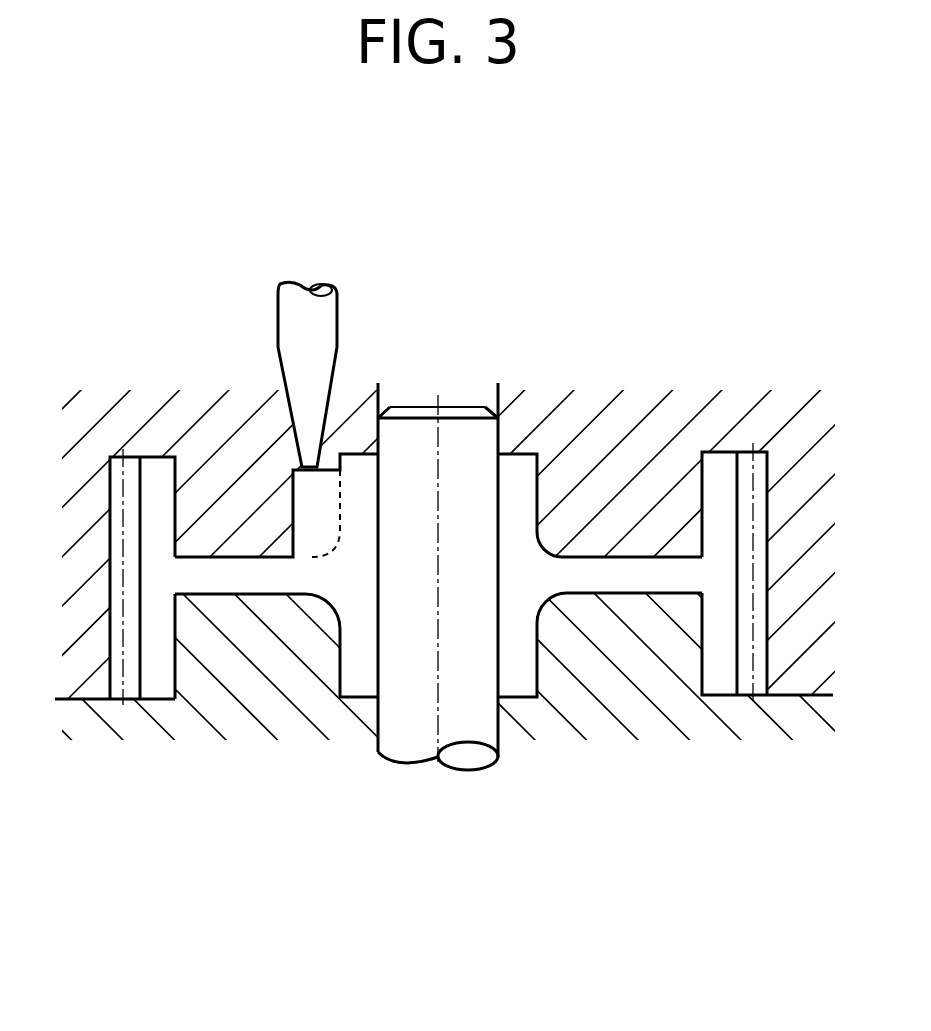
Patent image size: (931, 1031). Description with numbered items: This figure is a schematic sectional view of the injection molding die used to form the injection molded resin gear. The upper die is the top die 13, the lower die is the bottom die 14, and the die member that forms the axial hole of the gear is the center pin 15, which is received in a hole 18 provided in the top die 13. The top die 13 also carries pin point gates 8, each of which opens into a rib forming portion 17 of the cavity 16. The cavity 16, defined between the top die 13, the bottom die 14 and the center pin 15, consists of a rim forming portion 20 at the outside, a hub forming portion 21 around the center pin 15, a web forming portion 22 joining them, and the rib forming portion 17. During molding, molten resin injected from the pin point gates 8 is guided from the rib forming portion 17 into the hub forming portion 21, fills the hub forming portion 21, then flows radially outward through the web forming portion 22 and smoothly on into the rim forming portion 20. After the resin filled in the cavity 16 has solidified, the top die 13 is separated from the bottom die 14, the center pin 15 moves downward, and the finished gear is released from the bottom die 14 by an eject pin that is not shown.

The pin point gate 8 is at (292, 455).
The top die 13 is at (645, 452).
The bottom die 14 is at (645, 673).
The center pin 15 is at (408, 738).
The cavity 16 is at (350, 585).
The rib forming portion 17 is at (313, 512).
The hole 18 is at (497, 395).
The rim forming portion 20 is at (155, 677).
The hub forming portion 21 is at (520, 667).
The web forming portion 22 is at (675, 583).